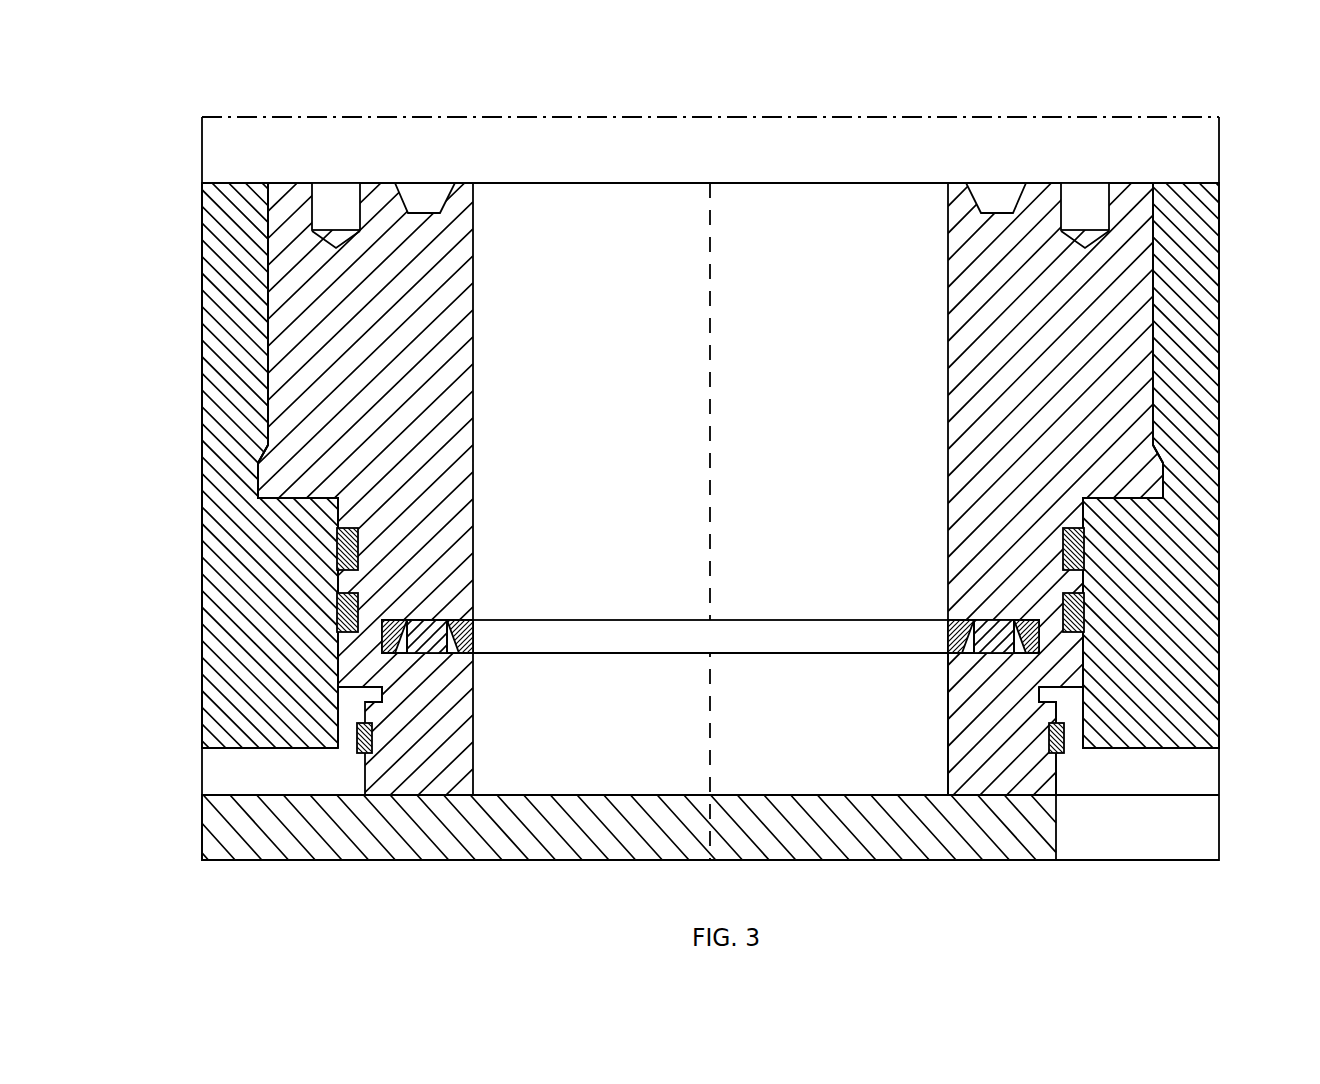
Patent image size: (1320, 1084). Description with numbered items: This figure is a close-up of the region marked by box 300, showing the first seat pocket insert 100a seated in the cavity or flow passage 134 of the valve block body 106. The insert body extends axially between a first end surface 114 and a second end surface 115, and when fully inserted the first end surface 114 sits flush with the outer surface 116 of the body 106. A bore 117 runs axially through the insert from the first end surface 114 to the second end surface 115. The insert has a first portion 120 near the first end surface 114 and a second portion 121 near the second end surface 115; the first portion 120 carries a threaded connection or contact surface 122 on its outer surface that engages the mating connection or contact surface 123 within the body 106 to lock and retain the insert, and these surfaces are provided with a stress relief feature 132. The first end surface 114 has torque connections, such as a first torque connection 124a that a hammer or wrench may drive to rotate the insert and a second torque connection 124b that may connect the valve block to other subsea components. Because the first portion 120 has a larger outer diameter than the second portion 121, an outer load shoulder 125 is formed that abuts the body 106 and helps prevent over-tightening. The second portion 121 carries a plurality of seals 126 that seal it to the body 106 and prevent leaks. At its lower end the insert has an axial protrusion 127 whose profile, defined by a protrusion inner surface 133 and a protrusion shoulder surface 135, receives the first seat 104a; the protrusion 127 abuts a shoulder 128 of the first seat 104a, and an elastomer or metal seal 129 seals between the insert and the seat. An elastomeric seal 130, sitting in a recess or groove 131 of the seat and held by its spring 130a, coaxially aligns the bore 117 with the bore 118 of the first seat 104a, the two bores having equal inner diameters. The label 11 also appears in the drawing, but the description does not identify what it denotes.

The box 300 is at (643, 117).
The outer surface 116 is at (230, 183).
The first end surface 114 is at (288, 183).
The first torque connection 124a is at (423, 200).
The second torque connection 124b is at (1085, 207).
The bore 117 is at (795, 228).
The cavity or flow passage 134 is at (1159, 242).
The first seat pocket insert 100a is at (1110, 370).
The first seat 104a is at (1010, 755).
The bore of the seat 118 is at (884, 771).
The first portion 120 is at (190, 318).
The second portion 121 is at (192, 502).
The connection or contact surface 122 is at (268, 293).
The connection or contact surface 123 is at (268, 340).
The outer load shoulder 125 is at (275, 497).
The stress relief feature 132 is at (1167, 487).
The body 106 is at (1090, 683).
The protrusion inner surface 133 is at (380, 683).
The plurality of seals 126 is at (347, 610).
The elastomer or metal seal 129 is at (343, 652).
The axial protrusion 127 is at (1075, 658).
The shoulder 128 is at (363, 710).
The second end surface 115 is at (1197, 746).
The elastomeric seal 130 is at (597, 640).
The recess or groove 131 is at (672, 654).
The spring 130a is at (474, 619).
The sealing element 11 is at (420, 623).
The protrusion shoulder surface 135 is at (430, 618).